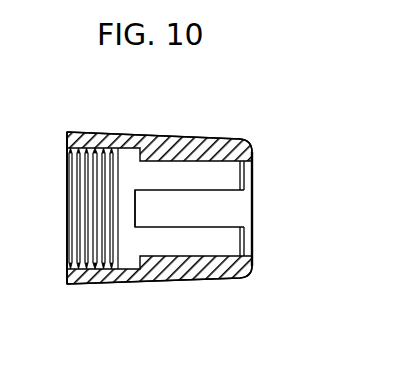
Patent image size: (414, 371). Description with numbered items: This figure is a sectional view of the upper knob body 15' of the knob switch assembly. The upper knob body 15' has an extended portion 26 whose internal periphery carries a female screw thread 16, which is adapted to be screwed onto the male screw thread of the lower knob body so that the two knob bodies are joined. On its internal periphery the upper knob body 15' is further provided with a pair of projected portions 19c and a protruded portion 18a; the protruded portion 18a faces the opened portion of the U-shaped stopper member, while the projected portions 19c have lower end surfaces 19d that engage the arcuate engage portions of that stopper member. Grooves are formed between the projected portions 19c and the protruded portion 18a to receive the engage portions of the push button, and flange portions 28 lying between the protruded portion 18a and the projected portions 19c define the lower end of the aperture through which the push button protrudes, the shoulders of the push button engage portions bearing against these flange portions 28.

The upper knob body 15' is at (159, 177).
The protruded portion 18a is at (155, 133).
The female screw thread 16 is at (84, 285).
The extended portion 26 is at (82, 131).
The flange portion 28 is at (244, 179).
The projected portion 19c is at (203, 256).
The lower end surface 19d is at (134, 203).